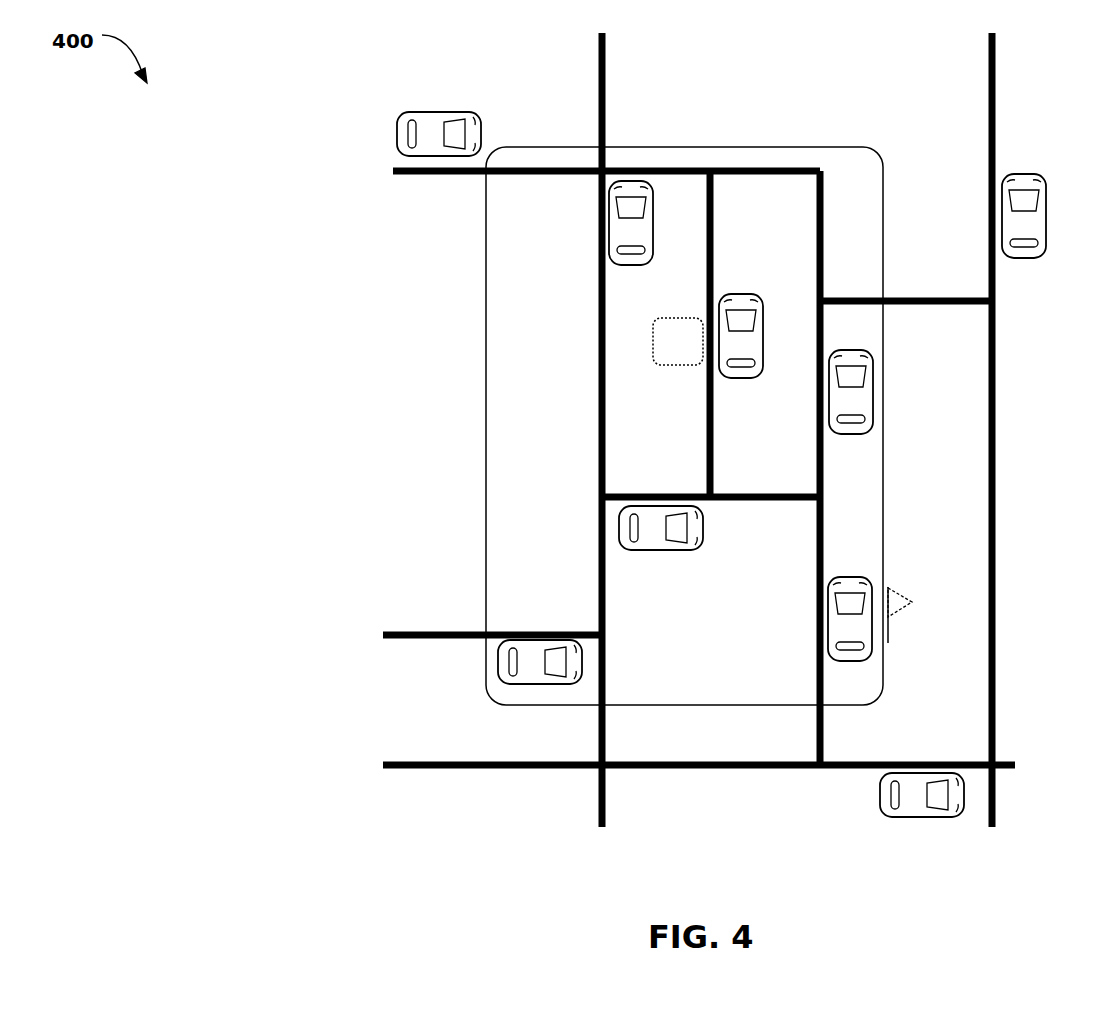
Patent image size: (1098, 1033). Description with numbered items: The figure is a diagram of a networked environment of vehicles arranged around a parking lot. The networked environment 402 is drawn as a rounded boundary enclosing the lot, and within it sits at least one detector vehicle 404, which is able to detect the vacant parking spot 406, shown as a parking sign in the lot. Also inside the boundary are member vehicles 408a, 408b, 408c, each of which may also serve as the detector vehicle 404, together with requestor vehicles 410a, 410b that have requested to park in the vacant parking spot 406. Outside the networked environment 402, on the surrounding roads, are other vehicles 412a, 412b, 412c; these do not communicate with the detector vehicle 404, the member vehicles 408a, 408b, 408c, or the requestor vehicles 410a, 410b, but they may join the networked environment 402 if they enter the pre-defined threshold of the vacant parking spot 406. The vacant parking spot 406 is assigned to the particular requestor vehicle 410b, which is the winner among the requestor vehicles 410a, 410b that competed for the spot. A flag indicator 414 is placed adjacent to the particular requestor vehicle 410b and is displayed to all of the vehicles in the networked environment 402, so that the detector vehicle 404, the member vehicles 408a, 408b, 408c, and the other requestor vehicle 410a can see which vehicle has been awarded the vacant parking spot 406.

The networked environment 402 is at (484, 357).
The detector vehicle 404 is at (757, 380).
The vacant parking spot 406 is at (679, 367).
The member vehicle 408a is at (640, 267).
The member vehicle 408b is at (858, 436).
The member vehicle 408c is at (645, 552).
The requestor vehicle 410a is at (513, 641).
The particular requestor vehicle 410b is at (837, 577).
The other vehicle 412a is at (447, 110).
The other vehicle 412b is at (1013, 175).
The other vehicle 412c is at (882, 800).
The flag indicator 414 is at (888, 643).